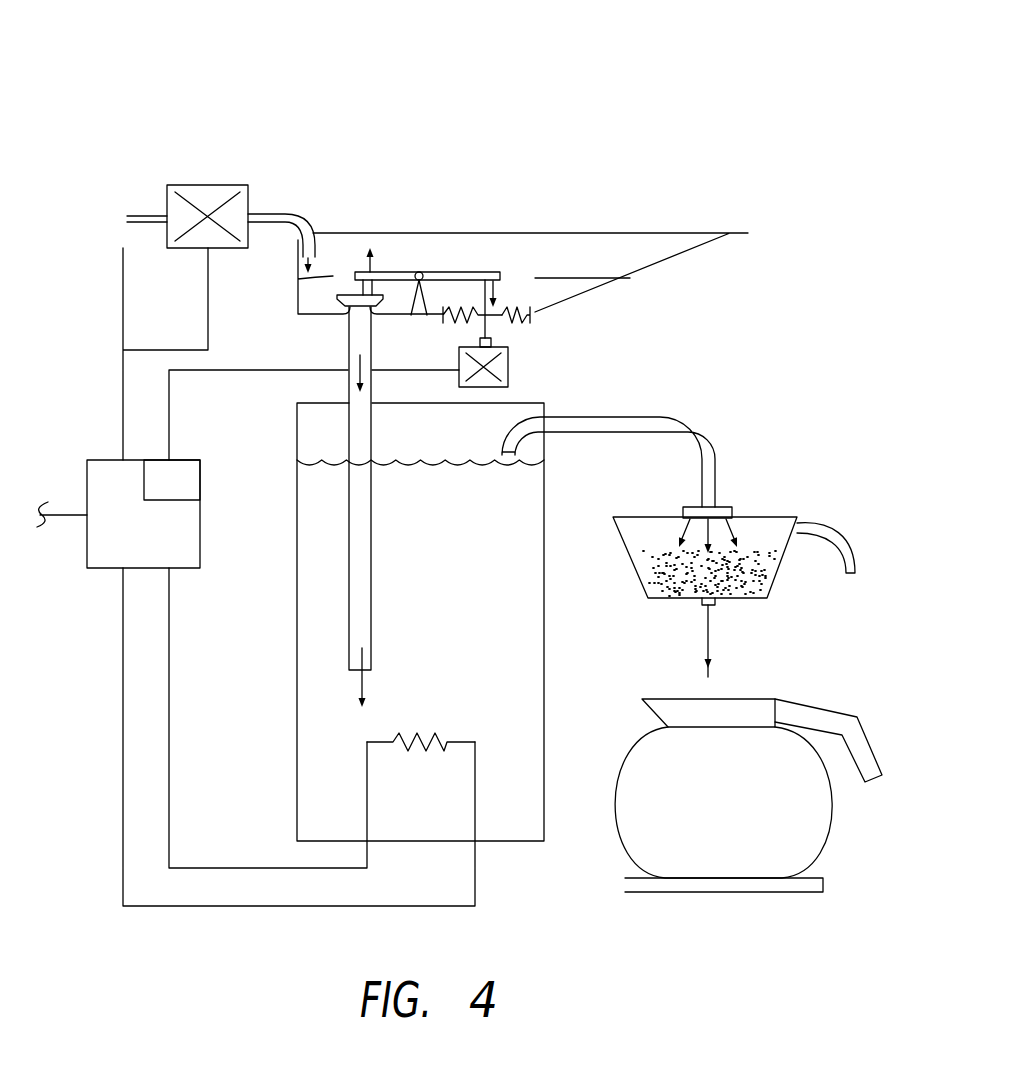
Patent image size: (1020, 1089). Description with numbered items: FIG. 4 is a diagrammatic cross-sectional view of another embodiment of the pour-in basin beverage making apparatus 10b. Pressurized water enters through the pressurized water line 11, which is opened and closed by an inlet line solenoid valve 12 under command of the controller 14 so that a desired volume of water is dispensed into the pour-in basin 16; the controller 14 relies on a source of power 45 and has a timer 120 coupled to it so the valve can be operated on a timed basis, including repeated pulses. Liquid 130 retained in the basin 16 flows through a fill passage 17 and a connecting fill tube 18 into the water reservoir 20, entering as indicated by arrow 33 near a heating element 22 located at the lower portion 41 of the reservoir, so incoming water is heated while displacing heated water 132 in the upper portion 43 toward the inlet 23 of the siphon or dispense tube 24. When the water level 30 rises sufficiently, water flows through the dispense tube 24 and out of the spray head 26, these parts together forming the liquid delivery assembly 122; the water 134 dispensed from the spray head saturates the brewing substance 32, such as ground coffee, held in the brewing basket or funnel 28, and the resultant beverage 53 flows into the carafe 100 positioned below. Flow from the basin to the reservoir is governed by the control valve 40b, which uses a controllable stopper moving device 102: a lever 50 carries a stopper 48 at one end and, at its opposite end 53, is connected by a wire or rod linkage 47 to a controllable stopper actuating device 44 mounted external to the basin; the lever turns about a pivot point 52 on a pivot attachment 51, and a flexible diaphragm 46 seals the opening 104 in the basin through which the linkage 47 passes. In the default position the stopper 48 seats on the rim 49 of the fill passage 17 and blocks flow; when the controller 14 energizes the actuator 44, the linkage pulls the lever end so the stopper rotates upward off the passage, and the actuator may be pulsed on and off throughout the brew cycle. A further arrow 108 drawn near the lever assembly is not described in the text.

The brewing apparatus 10b is at (640, 107).
The pressurized water line 11 is at (105, 216).
The inlet line solenoid valve 12 is at (214, 178).
The controller 14 is at (103, 570).
The pour-in basin 16 is at (720, 233).
The fill passage 17 is at (348, 325).
The connecting fill tube 18 is at (373, 570).
The water reservoir 20 is at (545, 672).
The heating element 22 is at (475, 795).
The inlet of the siphon tube 23 is at (508, 455).
The siphon tube 24 is at (710, 428).
The spray head 26 is at (732, 500).
The brewing basket 28 is at (765, 602).
The water level 30 is at (552, 461).
The brewing substance 32 is at (662, 590).
The arrow 33 is at (363, 682).
The control valve 40b is at (460, 228).
The lower portion of the water reservoir 41 is at (313, 772).
The upper portion of the reservoir 43 is at (307, 497).
The controllable stopper actuating device 44 is at (513, 365).
The source of power 45 is at (59, 498).
The flexible diaphragm 46 is at (502, 295).
The linkage 47 is at (487, 320).
The stopper 48 is at (350, 293).
The rim of the fill passage 49 is at (340, 308).
The lever 50 is at (438, 253).
The pivot attachment 51 is at (470, 272).
The pivot point 52 is at (420, 272).
The end of the lever 53 is at (503, 305).
The carafe 100 is at (835, 813).
The controllable stopper moving device 102 is at (540, 289).
The opening in the pour-in basin 104 is at (443, 322).
The movement arrow 108 is at (542, 307).
The timer 120 is at (200, 480).
The liquid delivery assembly 122 is at (748, 436).
The liquid 130 is at (598, 278).
The water in the reservoir 132 is at (518, 585).
The water dispensed from the spray head 134 is at (688, 533).